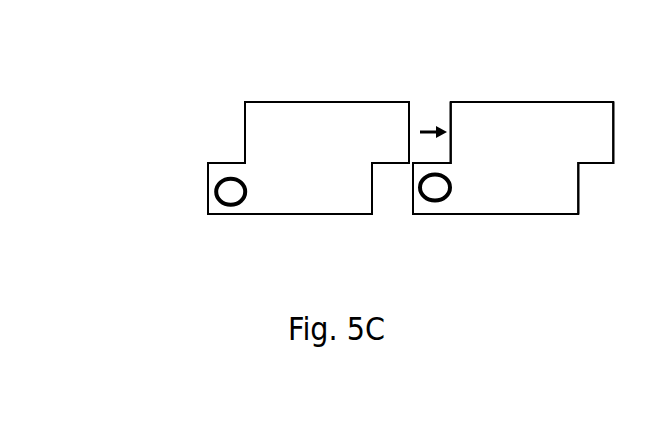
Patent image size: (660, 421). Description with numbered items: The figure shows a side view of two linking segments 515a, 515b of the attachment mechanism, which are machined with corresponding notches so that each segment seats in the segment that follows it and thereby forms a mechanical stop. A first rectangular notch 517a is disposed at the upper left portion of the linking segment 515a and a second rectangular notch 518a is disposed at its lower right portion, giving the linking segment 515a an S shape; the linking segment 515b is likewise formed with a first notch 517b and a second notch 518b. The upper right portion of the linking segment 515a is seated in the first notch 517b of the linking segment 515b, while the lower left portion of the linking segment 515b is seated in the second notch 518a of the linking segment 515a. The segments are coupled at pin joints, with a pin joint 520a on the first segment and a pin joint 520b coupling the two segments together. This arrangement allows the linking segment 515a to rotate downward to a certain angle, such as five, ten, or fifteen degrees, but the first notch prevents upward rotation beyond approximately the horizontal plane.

The linking segment 515a is at (270, 199).
The linking segment 515b is at (578, 148).
The first rectangular notch 517a is at (218, 113).
The first notch 517b is at (422, 113).
The second rectangular notch 518a is at (393, 214).
The second notch 518b is at (605, 193).
The pin joint 520a is at (215, 192).
The pin joint 520b is at (450, 186).